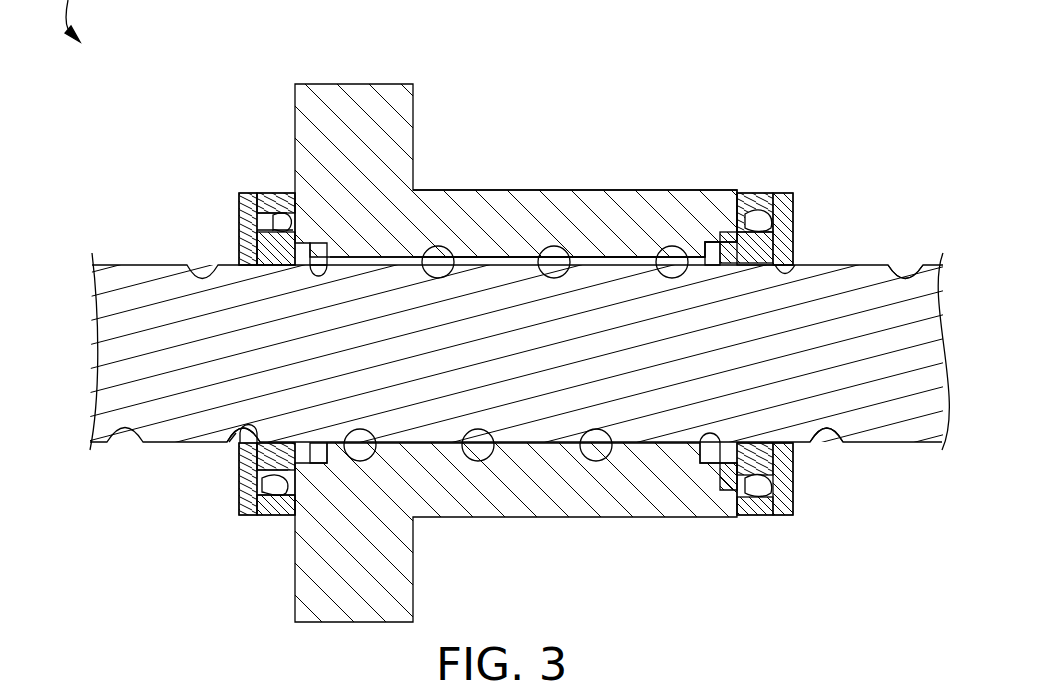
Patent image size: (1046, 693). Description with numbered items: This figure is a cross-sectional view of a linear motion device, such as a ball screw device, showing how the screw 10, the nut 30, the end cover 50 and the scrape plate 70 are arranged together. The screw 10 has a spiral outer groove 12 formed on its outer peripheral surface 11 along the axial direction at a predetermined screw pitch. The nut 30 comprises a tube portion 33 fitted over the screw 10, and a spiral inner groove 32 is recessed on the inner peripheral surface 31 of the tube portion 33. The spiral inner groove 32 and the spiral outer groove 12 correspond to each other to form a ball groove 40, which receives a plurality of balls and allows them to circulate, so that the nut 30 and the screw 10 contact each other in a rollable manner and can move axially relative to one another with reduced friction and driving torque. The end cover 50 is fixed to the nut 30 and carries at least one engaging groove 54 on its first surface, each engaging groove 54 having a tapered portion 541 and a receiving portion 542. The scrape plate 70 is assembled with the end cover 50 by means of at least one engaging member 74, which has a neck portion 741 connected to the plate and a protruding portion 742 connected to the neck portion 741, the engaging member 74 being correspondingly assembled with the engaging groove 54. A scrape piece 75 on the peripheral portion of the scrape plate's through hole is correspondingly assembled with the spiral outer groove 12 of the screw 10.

The screw 10 is at (857, 288).
The outer peripheral surface 11 is at (818, 266).
The spiral outer groove 12 is at (905, 272).
The nut 30 is at (537, 346).
The inner peripheral surface 31 is at (590, 257).
The spiral inner groove 32 is at (648, 258).
The tube portion 33 is at (490, 222).
The ball groove 40 is at (709, 445).
The end cover 50 is at (225, 213).
The engaging groove 54 is at (278, 220).
The tapered portion 541 is at (263, 248).
The receiving portion 542 is at (293, 205).
The scrape plate 70 is at (252, 517).
The engaging member 74 is at (225, 511).
The neck portion 741 is at (239, 500).
The protruding portion 742 is at (239, 478).
The scrape piece 75 is at (234, 436).